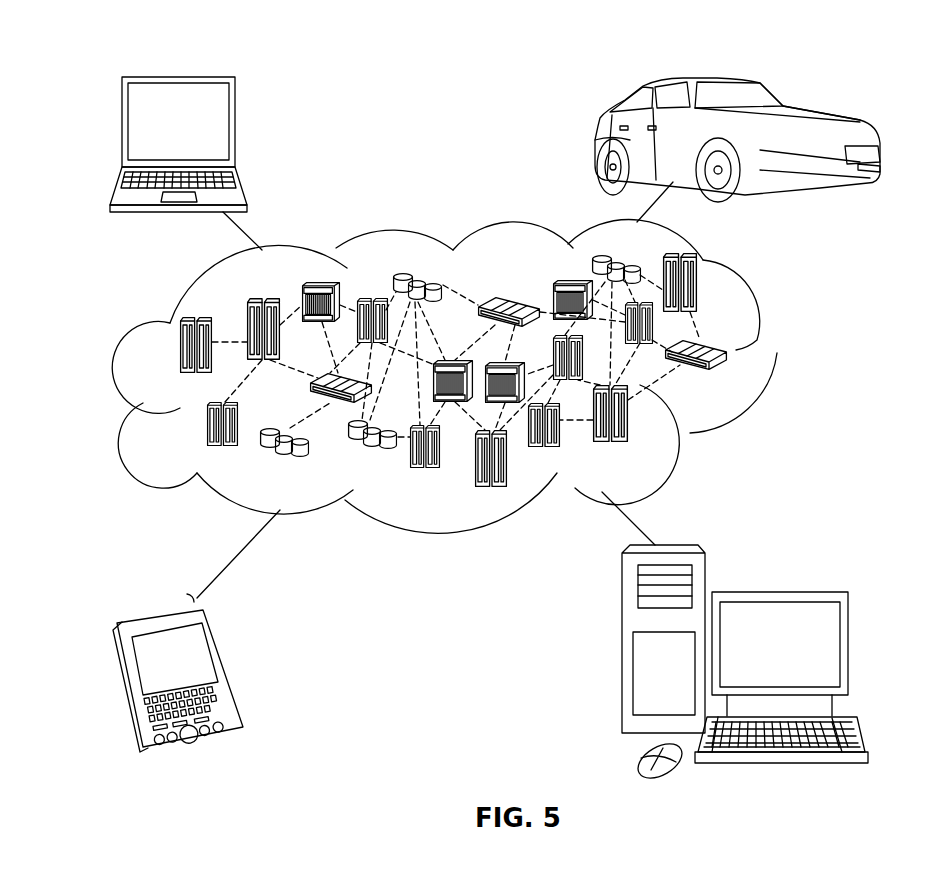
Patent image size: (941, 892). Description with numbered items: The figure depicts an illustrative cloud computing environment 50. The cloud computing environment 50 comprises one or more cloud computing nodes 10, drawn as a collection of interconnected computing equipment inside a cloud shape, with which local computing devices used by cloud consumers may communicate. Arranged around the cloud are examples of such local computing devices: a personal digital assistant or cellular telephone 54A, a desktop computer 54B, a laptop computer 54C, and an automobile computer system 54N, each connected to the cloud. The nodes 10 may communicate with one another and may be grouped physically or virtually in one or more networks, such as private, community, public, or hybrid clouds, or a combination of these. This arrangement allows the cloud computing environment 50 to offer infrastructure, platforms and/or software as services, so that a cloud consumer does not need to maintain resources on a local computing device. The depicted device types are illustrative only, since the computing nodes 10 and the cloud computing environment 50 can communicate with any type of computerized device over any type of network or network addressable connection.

The cloud computing node 10 is at (728, 378).
The cloud computing environment 50 is at (777, 353).
The personal digital assistant or cellular telephone 54A is at (227, 670).
The desktop computer 54B is at (777, 592).
The laptop computer 54C is at (236, 128).
The automobile computer system 54N is at (599, 141).